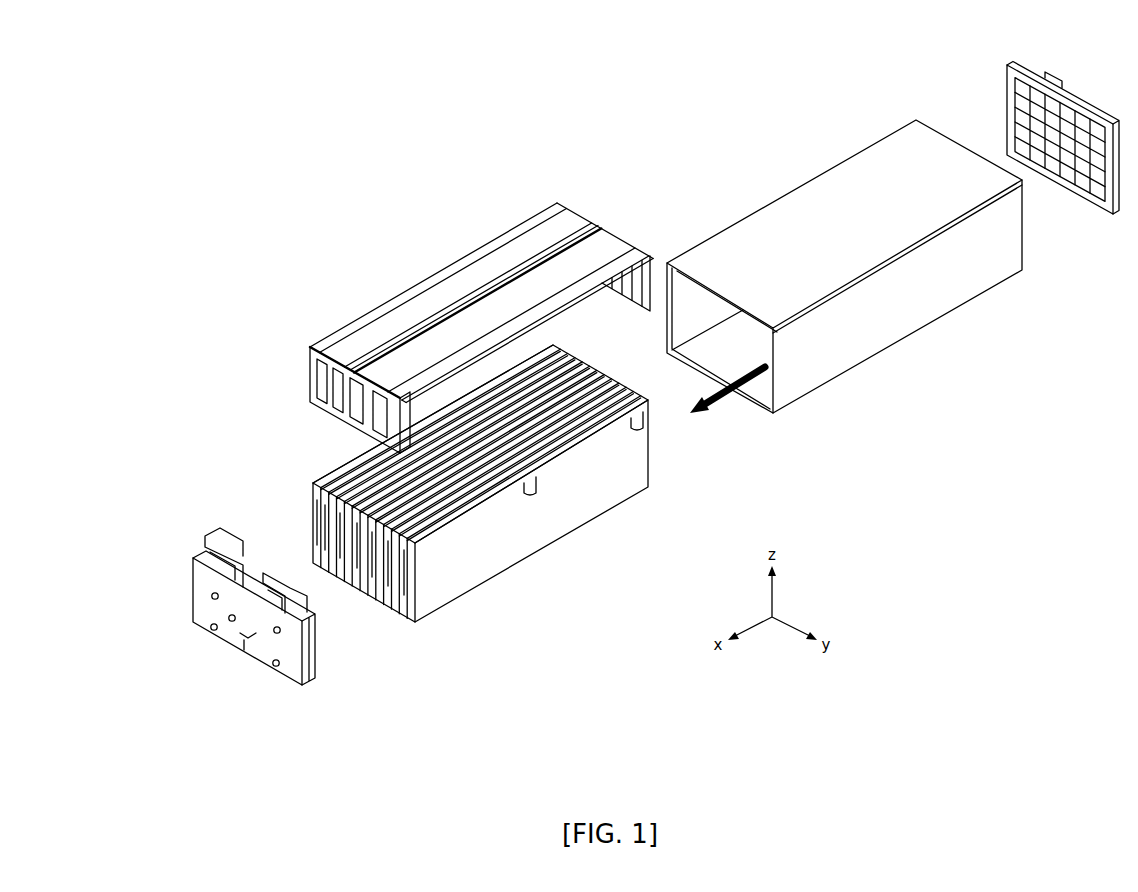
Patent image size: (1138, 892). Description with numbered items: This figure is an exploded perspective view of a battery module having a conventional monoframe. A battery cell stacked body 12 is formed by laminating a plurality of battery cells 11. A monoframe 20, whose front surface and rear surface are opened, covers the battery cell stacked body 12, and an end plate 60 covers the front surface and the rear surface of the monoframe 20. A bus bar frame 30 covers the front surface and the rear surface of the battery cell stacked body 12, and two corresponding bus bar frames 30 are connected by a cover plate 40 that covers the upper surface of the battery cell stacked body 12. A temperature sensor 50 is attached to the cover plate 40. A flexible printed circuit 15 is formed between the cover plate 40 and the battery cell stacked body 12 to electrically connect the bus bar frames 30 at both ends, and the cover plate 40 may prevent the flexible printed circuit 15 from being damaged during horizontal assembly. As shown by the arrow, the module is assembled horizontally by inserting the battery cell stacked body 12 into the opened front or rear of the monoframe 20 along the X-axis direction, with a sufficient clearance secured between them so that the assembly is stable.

The battery cell 11 is at (537, 530).
The battery cell stacked body 12 is at (466, 483).
The flexible printed circuit 15 is at (540, 275).
The monoframe 20 is at (918, 308).
The bus bar frame 30 is at (310, 373).
The cover plate 40 is at (481, 290).
The temperature sensor 50 is at (380, 356).
The end plate 60 is at (1025, 73).